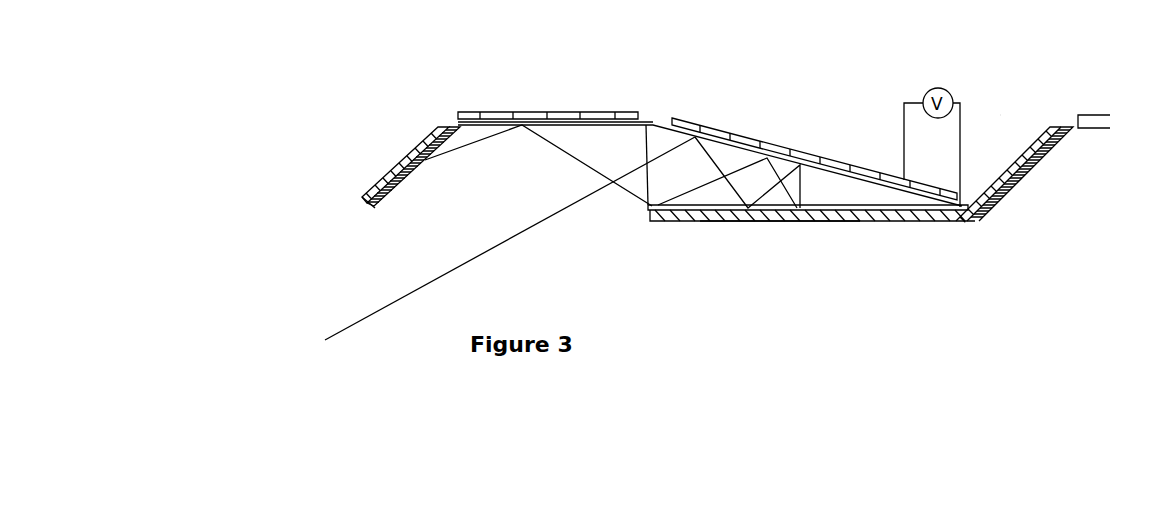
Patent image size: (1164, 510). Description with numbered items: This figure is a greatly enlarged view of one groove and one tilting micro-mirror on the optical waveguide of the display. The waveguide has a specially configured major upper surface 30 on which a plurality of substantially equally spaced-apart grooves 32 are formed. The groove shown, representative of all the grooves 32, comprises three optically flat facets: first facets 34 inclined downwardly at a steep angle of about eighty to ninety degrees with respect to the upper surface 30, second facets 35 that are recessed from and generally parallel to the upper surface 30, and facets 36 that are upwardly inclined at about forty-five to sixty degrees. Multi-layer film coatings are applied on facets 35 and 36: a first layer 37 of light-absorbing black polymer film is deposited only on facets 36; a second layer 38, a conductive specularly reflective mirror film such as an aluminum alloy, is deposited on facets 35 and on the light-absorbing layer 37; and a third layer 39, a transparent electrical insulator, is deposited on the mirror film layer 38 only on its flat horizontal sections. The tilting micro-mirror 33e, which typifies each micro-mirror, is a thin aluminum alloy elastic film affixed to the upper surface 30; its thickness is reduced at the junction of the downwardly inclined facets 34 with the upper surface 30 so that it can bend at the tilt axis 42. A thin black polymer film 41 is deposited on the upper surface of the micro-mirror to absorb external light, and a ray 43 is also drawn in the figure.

The upper surface 30 is at (1068, 128).
The grooves 32 is at (1000, 115).
The tilting micro-mirror 33e is at (782, 146).
The first facets 34 is at (650, 205).
The second facets 35 is at (777, 222).
The third facets 36 is at (375, 202).
The first layer 37 is at (403, 177).
The second layer 38 is at (395, 165).
The third layer 39 is at (923, 210).
The black polymer film 41 is at (503, 112).
The tilt axis 42 is at (646, 125).
The incident light ray 43 is at (485, 252).